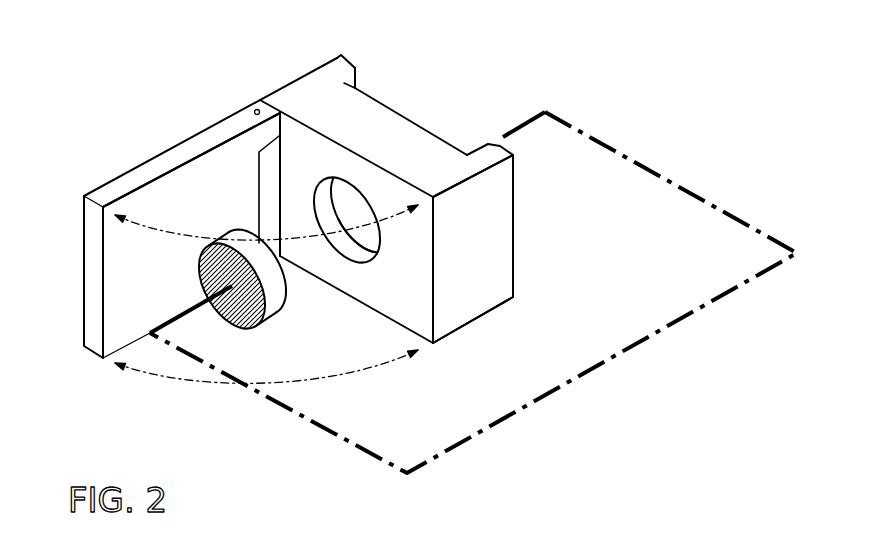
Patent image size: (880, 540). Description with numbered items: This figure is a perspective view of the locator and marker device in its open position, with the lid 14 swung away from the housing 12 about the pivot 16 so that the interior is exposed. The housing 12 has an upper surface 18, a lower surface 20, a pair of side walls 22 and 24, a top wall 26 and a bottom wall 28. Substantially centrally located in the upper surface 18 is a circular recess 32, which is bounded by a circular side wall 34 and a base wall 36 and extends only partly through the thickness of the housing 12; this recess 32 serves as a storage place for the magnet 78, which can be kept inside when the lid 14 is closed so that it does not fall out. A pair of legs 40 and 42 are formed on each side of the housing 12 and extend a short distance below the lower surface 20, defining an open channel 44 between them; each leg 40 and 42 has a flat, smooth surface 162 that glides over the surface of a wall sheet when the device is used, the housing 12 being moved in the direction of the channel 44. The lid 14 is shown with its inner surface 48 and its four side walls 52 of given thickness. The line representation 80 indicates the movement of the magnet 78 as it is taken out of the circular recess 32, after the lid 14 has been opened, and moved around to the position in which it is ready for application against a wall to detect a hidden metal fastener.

The housing 12 is at (511, 312).
The lid 14 is at (70, 265).
The pivot 16 is at (240, 109).
The upper surface 18 is at (440, 334).
The lower surface 20 is at (405, 115).
The side wall 22 is at (502, 227).
The side wall 24 is at (265, 90).
The top wall 26 is at (415, 140).
The bottom wall 28 is at (326, 282).
The circular recess 32 is at (354, 261).
The circular side wall 34 is at (320, 197).
The base wall 36 is at (348, 194).
The leg 40 is at (327, 63).
The leg 42 is at (507, 160).
The open channel 44 is at (367, 88).
The inner surface 48 is at (115, 338).
The side walls 52 is at (105, 192).
The magnet 78 is at (240, 325).
The line representation 80 is at (685, 318).
The flat, smooth surface 162 is at (350, 58).